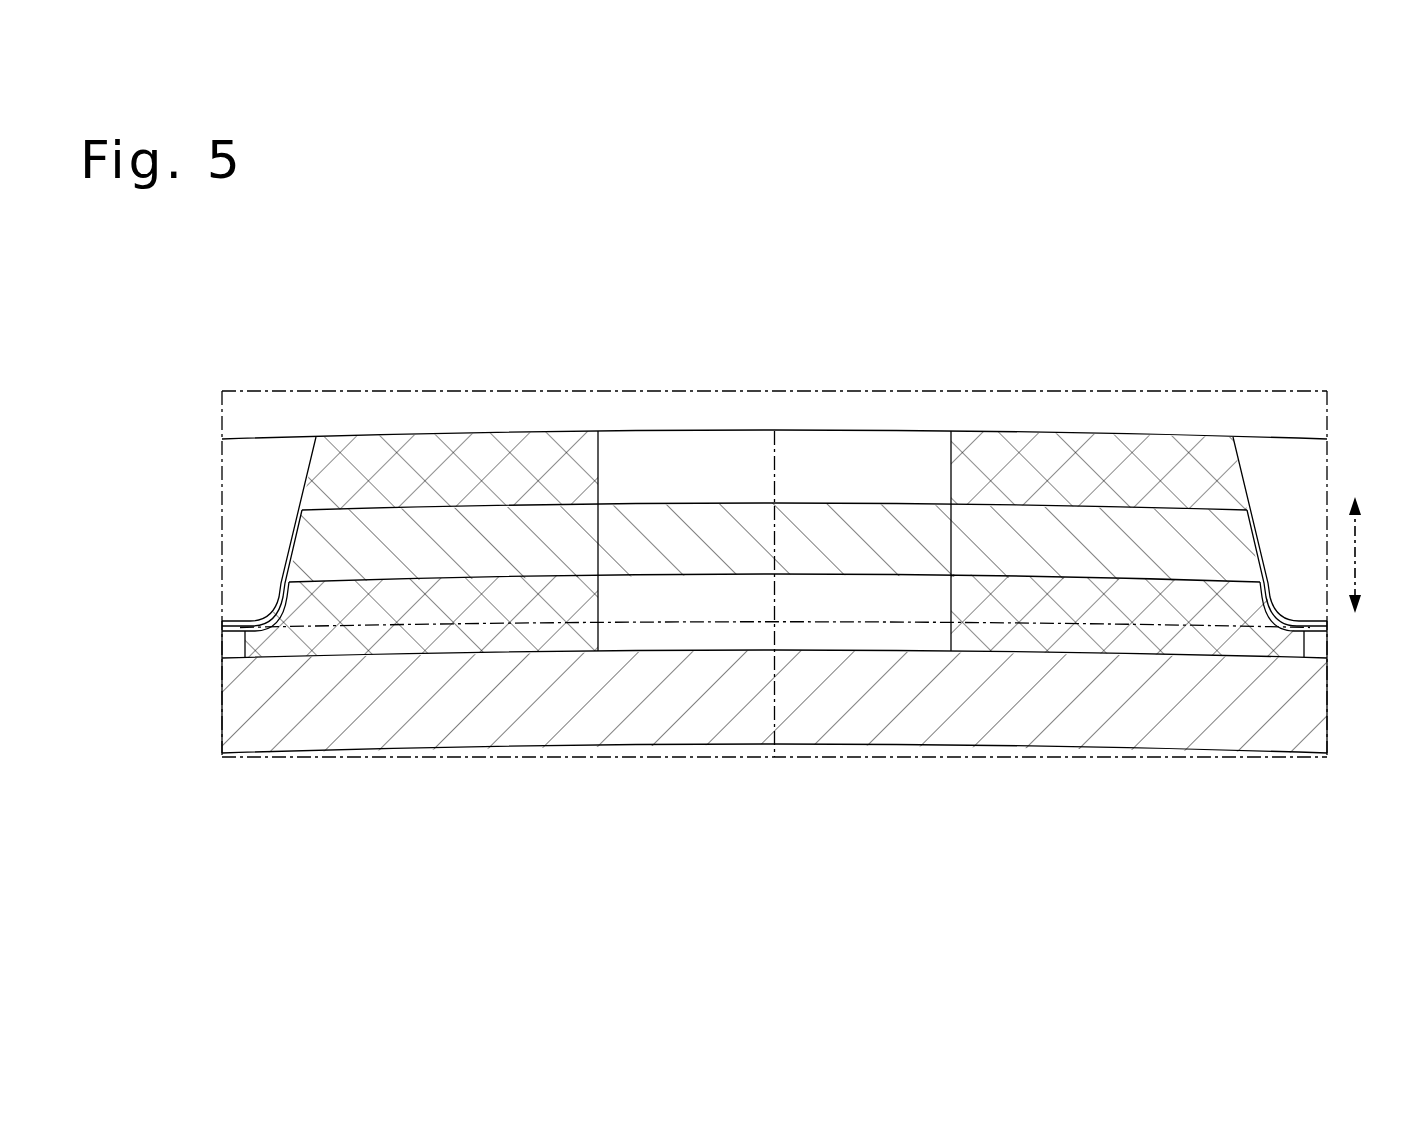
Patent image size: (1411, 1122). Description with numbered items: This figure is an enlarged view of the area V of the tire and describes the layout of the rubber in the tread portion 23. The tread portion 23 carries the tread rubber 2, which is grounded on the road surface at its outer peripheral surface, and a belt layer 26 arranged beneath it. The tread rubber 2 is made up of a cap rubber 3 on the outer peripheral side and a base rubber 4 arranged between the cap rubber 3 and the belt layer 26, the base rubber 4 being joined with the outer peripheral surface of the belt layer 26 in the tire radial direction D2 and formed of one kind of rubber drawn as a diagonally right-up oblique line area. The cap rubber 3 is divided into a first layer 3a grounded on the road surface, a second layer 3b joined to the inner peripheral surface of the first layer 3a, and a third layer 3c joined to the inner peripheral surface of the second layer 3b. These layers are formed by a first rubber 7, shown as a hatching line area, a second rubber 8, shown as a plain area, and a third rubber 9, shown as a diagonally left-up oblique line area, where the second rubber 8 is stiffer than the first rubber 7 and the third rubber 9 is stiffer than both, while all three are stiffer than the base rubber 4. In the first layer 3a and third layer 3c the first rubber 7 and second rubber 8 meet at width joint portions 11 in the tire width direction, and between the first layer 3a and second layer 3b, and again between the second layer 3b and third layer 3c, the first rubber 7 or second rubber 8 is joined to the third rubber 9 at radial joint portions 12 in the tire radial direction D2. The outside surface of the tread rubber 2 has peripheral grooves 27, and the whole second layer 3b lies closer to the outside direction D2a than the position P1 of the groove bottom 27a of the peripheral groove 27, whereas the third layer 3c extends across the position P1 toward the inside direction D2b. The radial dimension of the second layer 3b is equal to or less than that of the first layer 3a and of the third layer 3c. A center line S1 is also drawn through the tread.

The tread rubber 2 is at (706, 574).
The cap rubber 3 is at (723, 545).
The first layer 3a is at (215, 440).
The second layer 3b is at (215, 508).
The third layer 3c is at (745, 617).
The base rubber 4 is at (723, 700).
The first rubber 7 is at (413, 440).
The second rubber 8 is at (878, 440).
The third rubber 9 is at (1228, 518).
The width joint portion 11 is at (622, 450).
The radial joint portion 12 is at (792, 488).
The tread portion 23 is at (680, 410).
The belt layer 26 is at (672, 760).
The peripheral groove 27 is at (269, 434).
The groove bottom 27a is at (232, 614).
The center plane S1 is at (750, 450).
The position of the groove bottom P1 is at (1260, 630).
The area V is at (1265, 758).
The tire radial direction D2 is at (1361, 555).
The outside direction of the tire radial direction D2a is at (1353, 494).
The inside direction of the tire radial direction D2b is at (1354, 616).